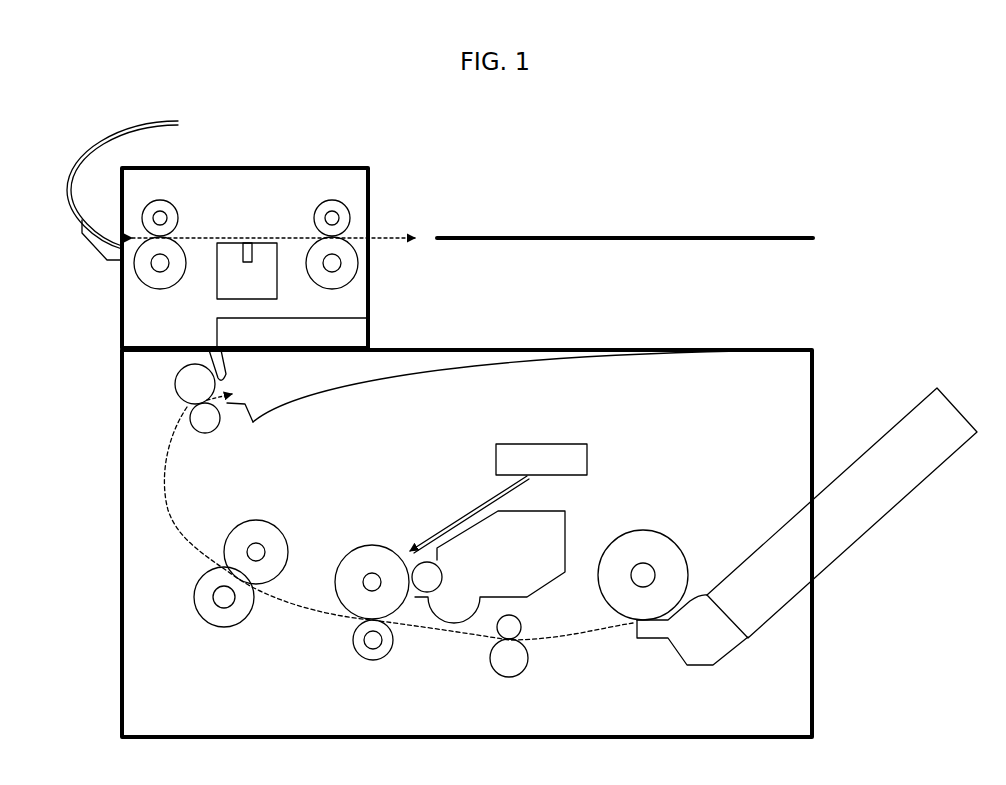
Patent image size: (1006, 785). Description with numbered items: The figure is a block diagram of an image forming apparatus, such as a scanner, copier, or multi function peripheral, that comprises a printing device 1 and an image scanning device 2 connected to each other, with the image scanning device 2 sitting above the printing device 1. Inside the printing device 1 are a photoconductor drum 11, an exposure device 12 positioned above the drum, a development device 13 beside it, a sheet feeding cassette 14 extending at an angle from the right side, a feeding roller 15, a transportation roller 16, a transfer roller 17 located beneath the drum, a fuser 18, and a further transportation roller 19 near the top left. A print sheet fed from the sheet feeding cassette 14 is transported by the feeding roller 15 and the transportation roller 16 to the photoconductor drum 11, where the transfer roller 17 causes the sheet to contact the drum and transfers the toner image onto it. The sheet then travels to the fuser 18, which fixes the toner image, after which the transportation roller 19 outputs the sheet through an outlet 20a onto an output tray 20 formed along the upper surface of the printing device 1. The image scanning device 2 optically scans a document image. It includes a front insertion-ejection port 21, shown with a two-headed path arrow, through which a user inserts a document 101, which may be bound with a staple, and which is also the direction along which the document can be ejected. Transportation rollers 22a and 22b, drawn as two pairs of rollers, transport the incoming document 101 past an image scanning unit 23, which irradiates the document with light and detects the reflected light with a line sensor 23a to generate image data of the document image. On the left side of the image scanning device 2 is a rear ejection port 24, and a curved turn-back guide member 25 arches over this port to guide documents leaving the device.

The printing device 1 is at (116, 448).
The image scanning device 2 is at (350, 165).
The photoconductor drum 11 is at (353, 552).
The exposure device 12 is at (566, 444).
The development device 13 is at (565, 530).
The sheet feeding cassette 14 is at (953, 412).
The feeding roller 15 is at (668, 536).
The transportation roller 16 is at (500, 678).
The transfer roller 17 is at (371, 661).
The fuser 18 is at (277, 516).
The transportation roller 19 is at (205, 432).
The output tray 20 is at (617, 331).
The outlet 20a is at (275, 384).
The front insertion-ejection port 21 is at (384, 224).
The transportation roller 22a is at (316, 212).
The transportation roller 22b is at (178, 212).
The image scanning unit 23 is at (217, 297).
The line sensor 23a is at (247, 262).
The rear ejection port 24 is at (118, 220).
The turn-back guide member 25 is at (67, 182).
The document 101 is at (778, 237).